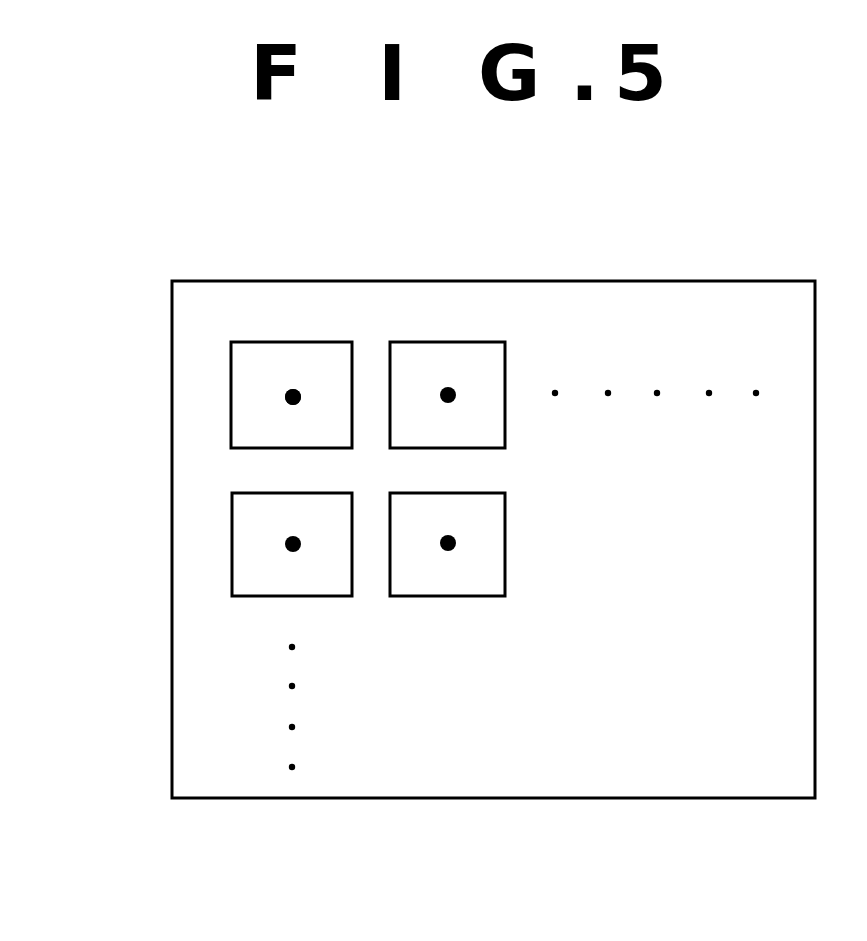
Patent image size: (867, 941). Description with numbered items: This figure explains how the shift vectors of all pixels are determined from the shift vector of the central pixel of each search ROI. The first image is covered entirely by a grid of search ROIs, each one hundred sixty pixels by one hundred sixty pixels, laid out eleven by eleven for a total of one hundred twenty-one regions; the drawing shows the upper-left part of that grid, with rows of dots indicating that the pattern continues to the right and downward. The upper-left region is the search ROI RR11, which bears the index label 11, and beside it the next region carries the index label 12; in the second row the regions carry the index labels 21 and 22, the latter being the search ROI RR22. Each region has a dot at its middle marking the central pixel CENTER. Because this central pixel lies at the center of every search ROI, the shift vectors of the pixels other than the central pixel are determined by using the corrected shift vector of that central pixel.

The search ROI RR11 is at (299, 342).
The search ROI RR22 is at (505, 546).
The search ROI index label 11 is at (311, 379).
The search ROI index label 12 is at (447, 395).
The search ROI index label 21 is at (292, 544).
The search ROI index label 22 is at (465, 564).
The central pixel of search ROI CENTER is at (288, 400).